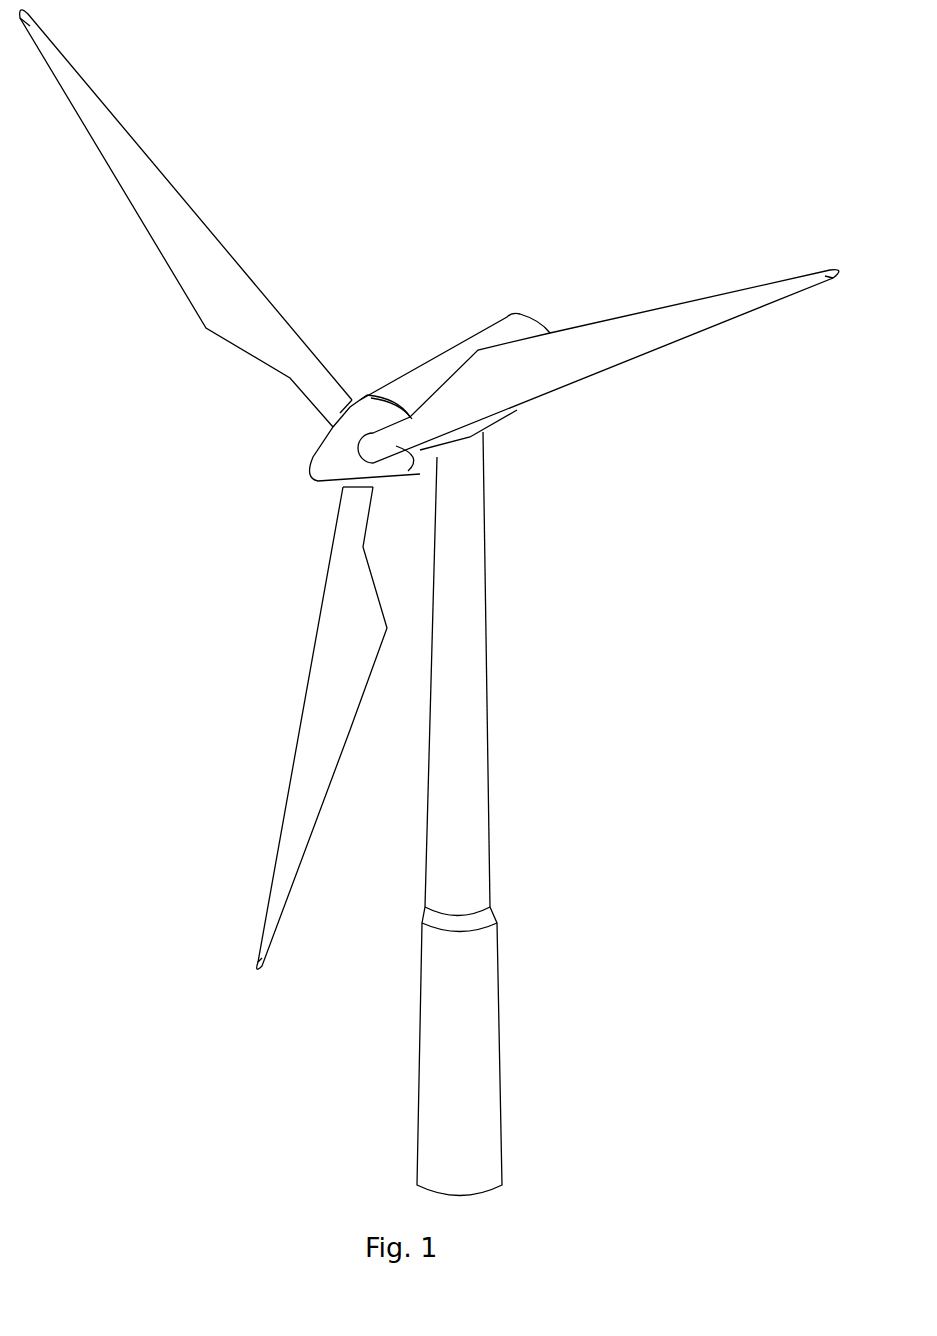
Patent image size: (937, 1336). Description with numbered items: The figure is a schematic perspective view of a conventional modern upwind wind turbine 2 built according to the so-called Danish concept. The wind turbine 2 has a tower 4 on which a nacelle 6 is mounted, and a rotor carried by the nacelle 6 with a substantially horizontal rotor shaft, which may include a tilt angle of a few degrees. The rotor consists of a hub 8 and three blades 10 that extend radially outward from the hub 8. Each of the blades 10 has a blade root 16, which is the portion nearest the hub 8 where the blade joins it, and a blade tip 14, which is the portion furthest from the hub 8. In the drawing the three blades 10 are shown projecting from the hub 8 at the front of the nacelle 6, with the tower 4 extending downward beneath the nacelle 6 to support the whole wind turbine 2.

The wind turbine 2 is at (592, 748).
The tower 4 is at (480, 674).
The nacelle 6 is at (422, 374).
The hub 8 is at (328, 462).
The blades 10 is at (218, 310).
The blade tip 14 is at (65, 68).
The blade root 16 is at (340, 413).